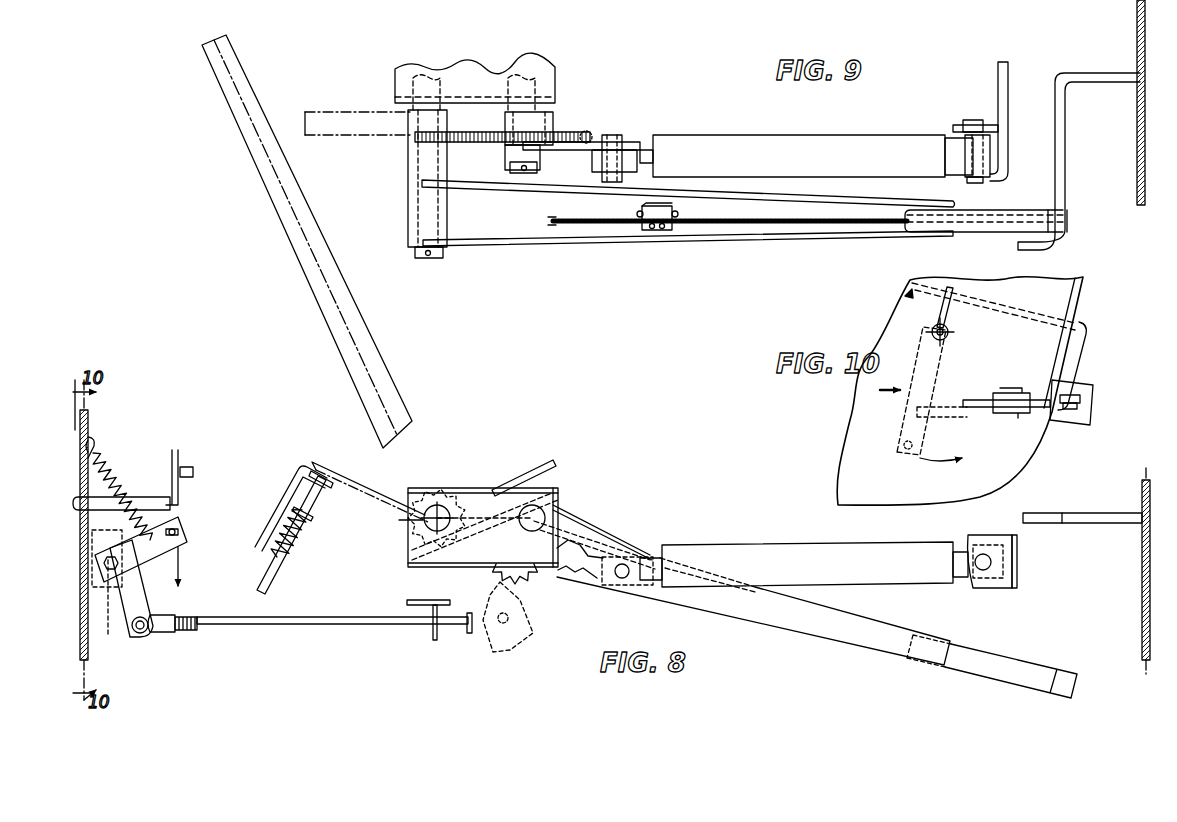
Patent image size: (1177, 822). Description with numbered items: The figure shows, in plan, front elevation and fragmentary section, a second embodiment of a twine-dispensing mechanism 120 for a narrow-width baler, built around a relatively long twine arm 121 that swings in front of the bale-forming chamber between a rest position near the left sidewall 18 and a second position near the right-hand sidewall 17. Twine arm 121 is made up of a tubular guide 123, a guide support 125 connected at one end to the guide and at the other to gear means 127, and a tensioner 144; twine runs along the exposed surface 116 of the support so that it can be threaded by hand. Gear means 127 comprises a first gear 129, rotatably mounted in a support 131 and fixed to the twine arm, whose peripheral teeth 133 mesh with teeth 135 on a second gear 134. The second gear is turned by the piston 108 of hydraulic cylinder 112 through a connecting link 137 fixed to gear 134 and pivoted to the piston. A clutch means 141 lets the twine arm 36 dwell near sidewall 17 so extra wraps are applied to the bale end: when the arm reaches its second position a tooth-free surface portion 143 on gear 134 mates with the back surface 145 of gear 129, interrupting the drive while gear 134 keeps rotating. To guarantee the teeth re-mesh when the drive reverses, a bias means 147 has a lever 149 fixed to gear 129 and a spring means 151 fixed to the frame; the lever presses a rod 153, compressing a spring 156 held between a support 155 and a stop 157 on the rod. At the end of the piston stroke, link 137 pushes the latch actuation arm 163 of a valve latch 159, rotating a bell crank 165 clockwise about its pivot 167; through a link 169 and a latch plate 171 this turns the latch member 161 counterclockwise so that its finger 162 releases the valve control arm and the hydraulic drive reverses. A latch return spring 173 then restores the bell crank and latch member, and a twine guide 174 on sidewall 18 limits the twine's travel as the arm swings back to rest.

In FIG. 8, the right-hand sidewall 17 is at (88, 428).
In FIG. 9, the left sidewall 18 is at (1137, 128).
In FIG. 8, the left sidewall 18 is at (1142, 612).
In FIG. 8, the twine arm 36 is at (364, 313).
In FIG. 9, the piston 108 is at (824, 122).
In FIG. 8, the piston 108 is at (809, 552).
In FIG. 9, the hydraulic cylinder 112 is at (716, 167).
In FIG. 8, the hydraulic cylinder 112 is at (791, 575).
In FIG. 9, the elongated exposed surface 116 is at (505, 215).
In FIG. 9, the twine-dispensing mechanism 120 is at (536, 153).
In FIG. 8, the twine-dispensing mechanism 120 is at (502, 482).
In FIG. 9, the twine arm 121 is at (808, 237).
In FIG. 8, the twine arm 121 is at (862, 652).
In FIG. 9, the tubular guide 123 is at (1008, 211).
In FIG. 8, the tubular guide 123 is at (1003, 660).
In FIG. 8, the guide support 125 is at (808, 620).
In FIG. 8, the gear means 127 is at (496, 475).
In FIG. 9, the first gear 129 is at (450, 146).
In FIG. 8, the first gear 129 is at (422, 563).
In FIG. 9, the support 131 is at (505, 76).
In FIG. 8, the support 131 is at (461, 568).
In FIG. 8, the teeth 133 is at (458, 487).
In FIG. 9, the second gear 134 is at (588, 132).
In FIG. 8, the second gear 134 is at (546, 492).
In FIG. 8, the teeth 135 is at (570, 568).
In FIG. 9, the connecting link 137 is at (622, 136).
In FIG. 8, the connecting link 137 is at (574, 518).
In FIG. 8, the clutch means 141 is at (546, 590).
In FIG. 8, the tooth-free surface portion 143 is at (528, 618).
In FIG. 9, the tensioner 144 is at (645, 237).
In FIG. 8, the back surface 145 is at (418, 547).
In FIG. 8, the bias means 147 is at (335, 448).
In FIG. 9, the lever 149 is at (355, 137).
In FIG. 8, the lever 149 is at (366, 487).
In FIG. 8, the spring means 151 is at (287, 518).
In FIG. 8, the rod 153 is at (272, 583).
In FIG. 8, the channel bracket 155 is at (255, 557).
In FIG. 8, the spring 156 is at (297, 551).
In FIG. 8, the stop 157 is at (312, 518).
In FIG. 8, the valve latch 159 is at (157, 432).
In FIG. 10, the latch member 161 is at (950, 336).
In FIG. 8, the latch member 161 is at (147, 497).
In FIG. 10, the finger 162 is at (955, 312).
In FIG. 8, the latch actuation arm 163 is at (320, 624).
In FIG. 8, the bell crank 165 is at (141, 608).
In FIG. 8, the pivot 167 is at (108, 578).
In FIG. 10, the link 169 is at (967, 418).
In FIG. 8, the link 169 is at (193, 474).
In FIG. 10, the latch plate 171 is at (933, 370).
In FIG. 8, the latch plate 171 is at (178, 450).
In FIG. 8, the latch return spring 173 is at (103, 451).
In FIG. 9, the twine guide 174 is at (1092, 74).
In FIG. 8, the twine guide 174 is at (1083, 518).